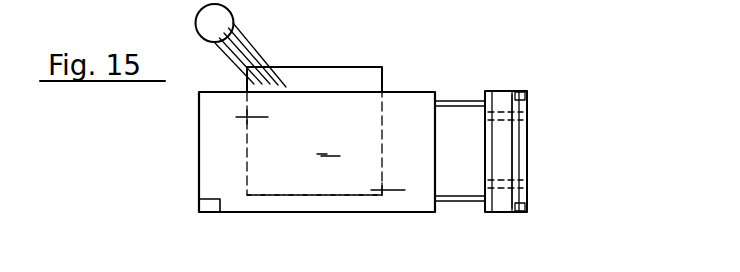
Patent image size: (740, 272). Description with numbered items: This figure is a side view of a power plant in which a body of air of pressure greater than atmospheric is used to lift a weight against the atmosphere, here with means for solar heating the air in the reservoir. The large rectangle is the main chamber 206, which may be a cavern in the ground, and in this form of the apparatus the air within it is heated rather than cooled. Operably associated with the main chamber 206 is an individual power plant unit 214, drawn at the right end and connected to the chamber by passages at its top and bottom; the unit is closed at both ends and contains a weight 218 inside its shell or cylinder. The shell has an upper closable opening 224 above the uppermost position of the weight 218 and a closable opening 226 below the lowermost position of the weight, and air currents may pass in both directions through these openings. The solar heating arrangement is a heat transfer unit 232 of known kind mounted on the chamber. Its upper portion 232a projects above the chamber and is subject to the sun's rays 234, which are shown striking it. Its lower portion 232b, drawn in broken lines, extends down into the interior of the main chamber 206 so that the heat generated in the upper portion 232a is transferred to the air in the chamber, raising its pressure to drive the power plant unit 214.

The main chamber 206 is at (199, 172).
The power plant unit 214 is at (527, 157).
The weight 218 is at (513, 118).
The upper closable opening 224 is at (527, 97).
The closable opening 226 is at (527, 203).
The heat transfer unit 232 is at (339, 67).
The upper portion 232a is at (365, 75).
The lower portion 232b is at (317, 197).
The sun's rays 234 is at (262, 48).